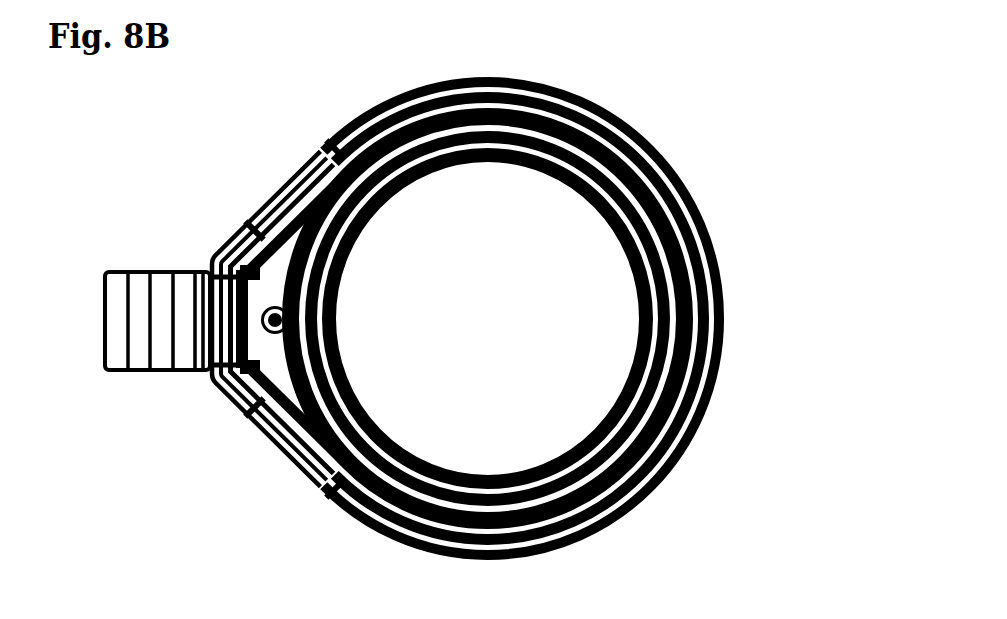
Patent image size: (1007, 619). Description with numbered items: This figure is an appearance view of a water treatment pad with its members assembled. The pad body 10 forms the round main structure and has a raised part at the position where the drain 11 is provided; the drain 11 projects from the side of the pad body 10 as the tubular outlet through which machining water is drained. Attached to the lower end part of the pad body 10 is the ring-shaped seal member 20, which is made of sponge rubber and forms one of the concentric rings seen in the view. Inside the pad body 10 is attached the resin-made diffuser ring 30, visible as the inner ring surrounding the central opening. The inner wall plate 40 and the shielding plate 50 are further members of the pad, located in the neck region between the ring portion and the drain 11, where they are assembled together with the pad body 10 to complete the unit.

The pad body 10 is at (620, 118).
The ring-shaped seal member 20 is at (687, 212).
The diffuser ring 30 is at (683, 382).
The inner wall plate 40 is at (262, 423).
The shielding plate 50 is at (245, 220).
The drain 11 is at (118, 282).